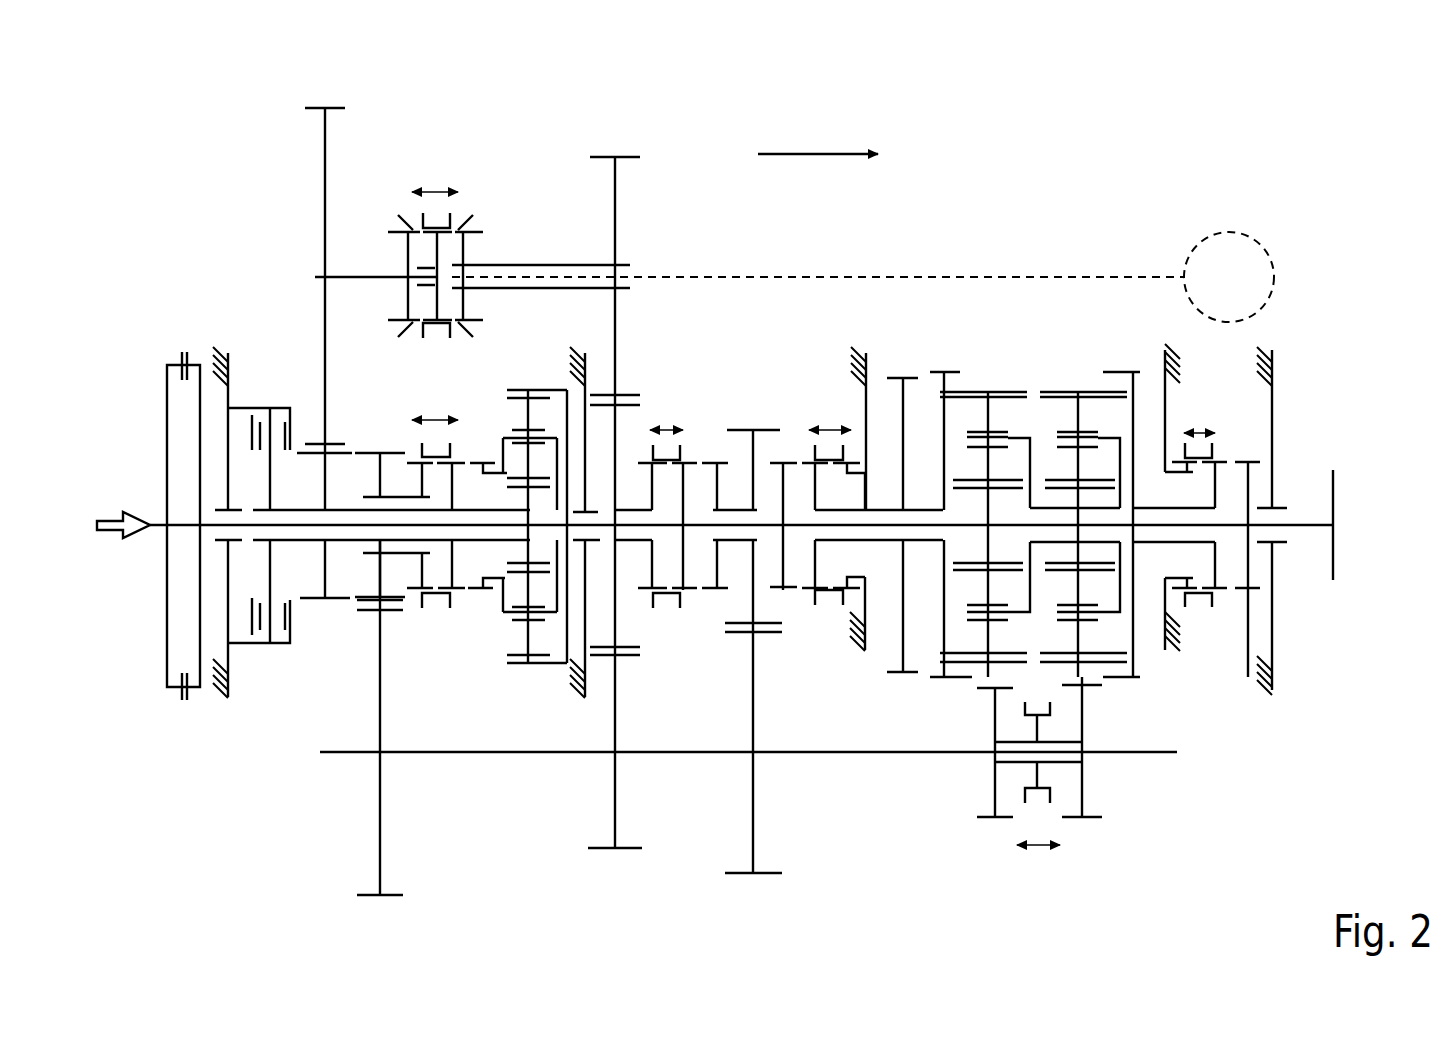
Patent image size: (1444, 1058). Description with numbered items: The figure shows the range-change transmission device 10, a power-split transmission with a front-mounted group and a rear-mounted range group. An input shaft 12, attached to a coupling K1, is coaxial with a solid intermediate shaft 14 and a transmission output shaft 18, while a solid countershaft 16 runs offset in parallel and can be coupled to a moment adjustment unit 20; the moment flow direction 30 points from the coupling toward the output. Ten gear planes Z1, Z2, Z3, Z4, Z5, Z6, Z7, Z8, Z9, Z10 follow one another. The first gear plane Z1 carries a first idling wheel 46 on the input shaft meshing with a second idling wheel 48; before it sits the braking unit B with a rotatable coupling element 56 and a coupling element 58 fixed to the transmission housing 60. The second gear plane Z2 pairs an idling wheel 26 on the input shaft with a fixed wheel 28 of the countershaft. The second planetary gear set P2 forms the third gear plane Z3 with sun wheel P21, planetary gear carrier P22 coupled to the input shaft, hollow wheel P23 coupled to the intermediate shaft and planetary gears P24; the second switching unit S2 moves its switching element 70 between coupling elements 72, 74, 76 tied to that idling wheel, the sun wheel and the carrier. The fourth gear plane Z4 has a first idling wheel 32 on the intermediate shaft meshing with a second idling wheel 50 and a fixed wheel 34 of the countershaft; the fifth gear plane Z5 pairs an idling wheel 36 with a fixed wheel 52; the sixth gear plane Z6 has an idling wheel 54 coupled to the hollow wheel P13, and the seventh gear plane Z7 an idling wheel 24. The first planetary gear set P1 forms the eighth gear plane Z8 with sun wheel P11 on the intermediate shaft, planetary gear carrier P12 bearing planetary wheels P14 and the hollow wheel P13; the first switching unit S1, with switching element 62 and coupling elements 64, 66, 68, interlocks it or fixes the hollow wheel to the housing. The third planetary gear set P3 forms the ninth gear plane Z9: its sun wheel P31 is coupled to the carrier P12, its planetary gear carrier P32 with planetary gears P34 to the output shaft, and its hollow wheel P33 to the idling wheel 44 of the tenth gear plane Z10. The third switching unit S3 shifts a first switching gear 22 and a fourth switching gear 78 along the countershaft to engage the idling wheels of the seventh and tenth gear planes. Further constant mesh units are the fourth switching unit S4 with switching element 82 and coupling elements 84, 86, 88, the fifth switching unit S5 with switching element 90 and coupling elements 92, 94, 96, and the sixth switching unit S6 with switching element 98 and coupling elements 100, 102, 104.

The range-change transmission device 10 is at (1362, 263).
The input shaft 12 is at (215, 560).
The intermediate shaft 14 is at (812, 525).
The countershaft 16 is at (520, 753).
The transmission output shaft 18 is at (1310, 527).
The moment adjustment unit 20 is at (1270, 253).
The first switching gear 22 is at (1007, 820).
The idling wheel 24 is at (957, 678).
The idling wheel 26 is at (353, 607).
The fixed wheel 28 is at (370, 610).
The moment flow direction 30 is at (823, 150).
The first idling wheel 32 is at (603, 660).
The fixed wheel 34 is at (605, 657).
The idling wheel 36 is at (727, 622).
The idling wheel 44 is at (1113, 680).
The first idling wheel 46 is at (310, 597).
The second idling wheel 48 is at (315, 443).
The second idling wheel 50 is at (613, 393).
The fixed wheel 52 is at (753, 642).
The idling wheel 54 is at (940, 685).
The rotatably mounted coupling element 56 is at (272, 420).
The housing-fixed coupling element 58 is at (250, 430).
The transmission housing 60 is at (218, 352).
The switching element 62 is at (817, 603).
The first coupling element 64 is at (750, 635).
The second coupling element 66 is at (783, 600).
The third coupling element 68 is at (855, 600).
The switching element 70 is at (423, 593).
The first coupling element 72 is at (380, 617).
The second coupling element 74 is at (438, 603).
The third coupling element 76 is at (497, 590).
The fourth switching gear 78 is at (1092, 820).
The switching element 82 is at (704, 462).
The coupling element 84 is at (665, 422).
The coupling element 86 is at (690, 468).
The coupling element 88 is at (766, 430).
The switching element 90 is at (1213, 610).
The first coupling element 92 is at (1187, 600).
The second coupling element 94 is at (1220, 600).
The third coupling element 96 is at (1276, 640).
The switching element 98 is at (407, 213).
The first coupling element 100 is at (393, 230).
The second coupling element 102 is at (450, 243).
The third coupling element 104 is at (482, 243).
The braking unit B is at (265, 408).
The coupling K1 is at (185, 705).
The first switching unit S1 is at (828, 415).
The second switching unit S2 is at (416, 445).
The third switching unit S3 is at (1060, 830).
The fourth switching unit S4 is at (670, 420).
The fifth switching unit S5 is at (1213, 388).
The sixth switching unit S6 is at (437, 180).
The first gear plane Z1 is at (325, 104).
The second gear plane Z2 is at (380, 900).
The third gear plane Z3 is at (582, 373).
The fourth gear plane Z4 is at (615, 153).
The fifth gear plane Z5 is at (753, 878).
The sixth gear plane Z6 is at (903, 368).
The seventh gear plane Z7 is at (944, 365).
The eighth gear plane Z8 is at (998, 396).
The ninth gear plane Z9 is at (1115, 396).
The tenth gear plane Z10 is at (1133, 366).
The first planetary gear set P1 is at (975, 392).
The second planetary gear set P2 is at (557, 437).
The third planetary gear set P3 is at (1097, 385).
The first transmission element P11 is at (960, 480).
The second transmission element P12 is at (1079, 382).
The third transmission element P13 is at (1012, 437).
The planetary wheels P14 is at (987, 370).
The first transmission element P21 is at (503, 468).
The second transmission element P22 is at (537, 445).
The third transmission element P23 is at (567, 388).
The planetary gears P24 is at (535, 380).
The first transmission element P31 is at (1120, 478).
The second transmission element P32 is at (1080, 420).
The third transmission element P33 is at (1103, 383).
The planetary gears P34 is at (1122, 437).